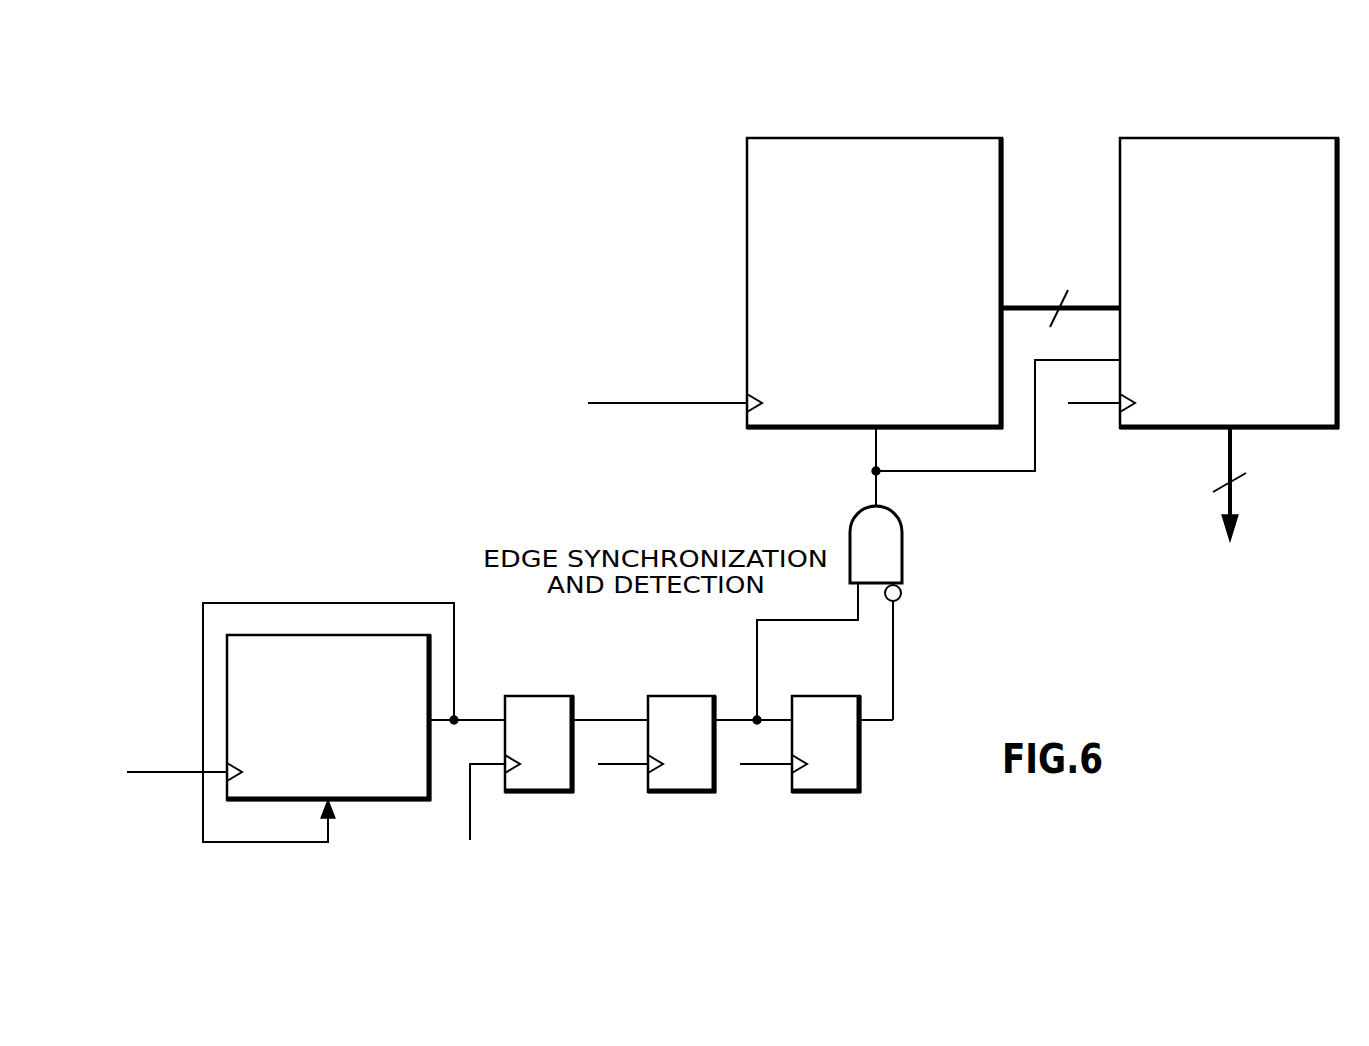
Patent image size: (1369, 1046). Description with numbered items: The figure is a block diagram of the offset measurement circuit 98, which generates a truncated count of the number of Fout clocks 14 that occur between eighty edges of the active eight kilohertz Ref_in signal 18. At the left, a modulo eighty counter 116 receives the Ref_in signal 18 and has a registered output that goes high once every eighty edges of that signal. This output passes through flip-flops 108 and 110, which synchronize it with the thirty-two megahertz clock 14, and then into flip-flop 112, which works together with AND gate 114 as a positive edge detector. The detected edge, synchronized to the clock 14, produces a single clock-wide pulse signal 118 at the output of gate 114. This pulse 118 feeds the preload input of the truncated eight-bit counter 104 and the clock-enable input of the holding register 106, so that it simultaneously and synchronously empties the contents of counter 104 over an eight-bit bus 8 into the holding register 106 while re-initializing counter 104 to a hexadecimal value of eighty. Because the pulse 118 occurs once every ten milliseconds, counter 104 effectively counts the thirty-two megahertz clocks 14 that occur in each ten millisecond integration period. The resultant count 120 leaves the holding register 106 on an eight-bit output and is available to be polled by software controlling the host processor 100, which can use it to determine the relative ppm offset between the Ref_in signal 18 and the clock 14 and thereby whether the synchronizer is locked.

The offset measurement circuit 98 is at (483, 83).
The counter 104 is at (747, 190).
The holding register 106 is at (1120, 188).
The 8-bit bus 8 is at (1134, 379).
The CLK_32M clock 14 is at (665, 403).
The AND gate 114 is at (904, 556).
The pulse signal 118 is at (1000, 472).
The resultant count 120 is at (1228, 464).
The host processor 100 is at (1230, 609).
The modulo 80 counter 116 is at (227, 668).
The Ref_in signal 18 is at (162, 772).
The flip-flop 108 is at (540, 696).
The flip-flop 110 is at (683, 696).
The flip-flop 112 is at (828, 696).